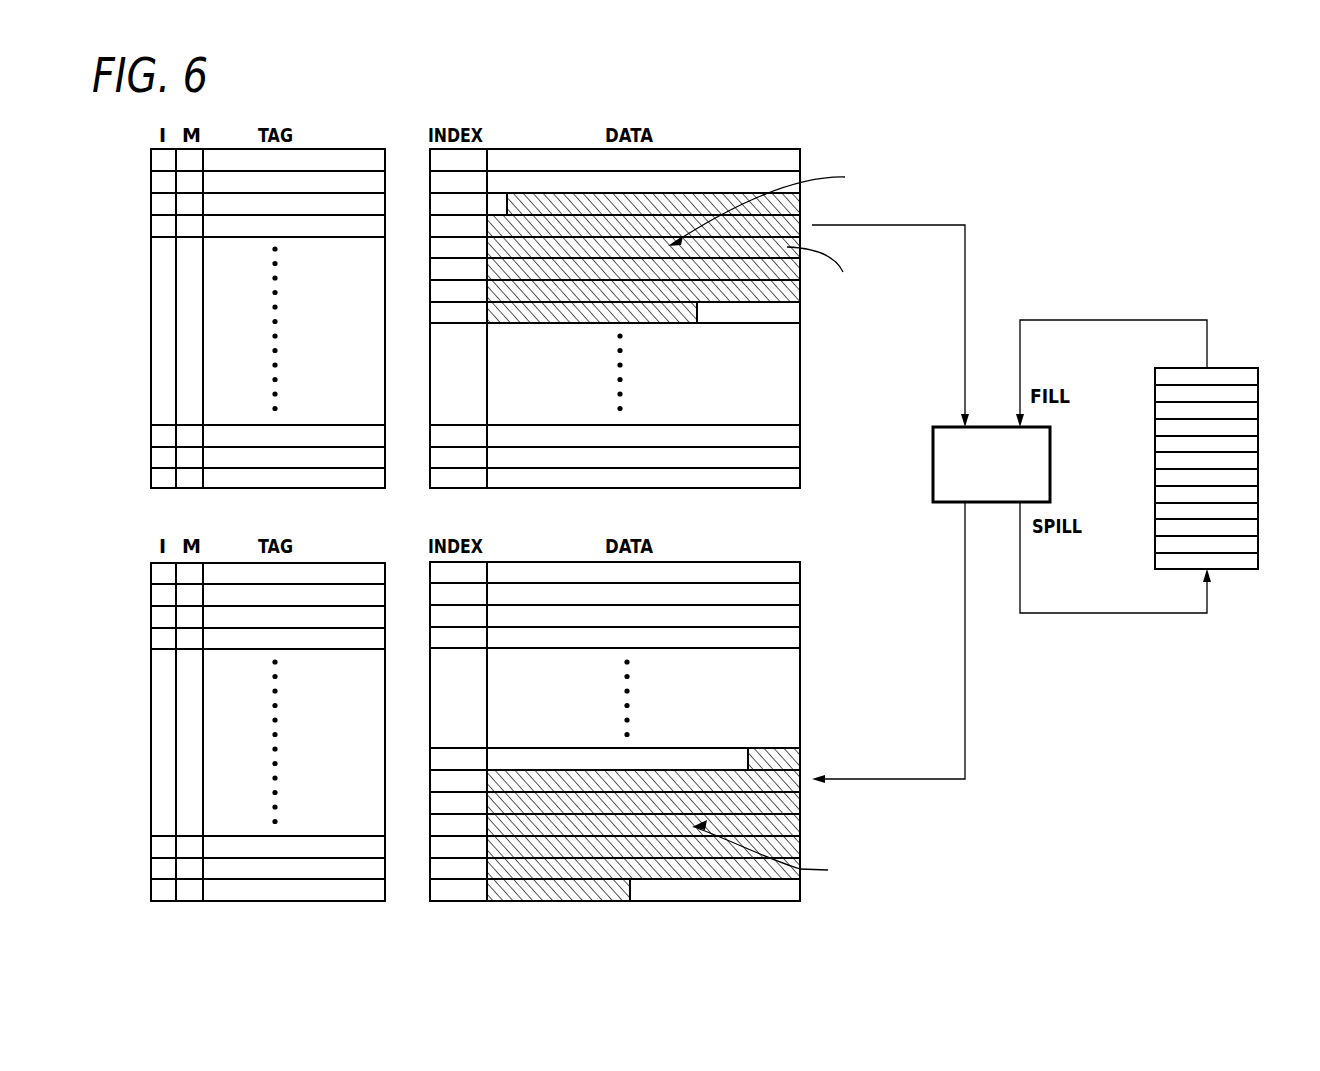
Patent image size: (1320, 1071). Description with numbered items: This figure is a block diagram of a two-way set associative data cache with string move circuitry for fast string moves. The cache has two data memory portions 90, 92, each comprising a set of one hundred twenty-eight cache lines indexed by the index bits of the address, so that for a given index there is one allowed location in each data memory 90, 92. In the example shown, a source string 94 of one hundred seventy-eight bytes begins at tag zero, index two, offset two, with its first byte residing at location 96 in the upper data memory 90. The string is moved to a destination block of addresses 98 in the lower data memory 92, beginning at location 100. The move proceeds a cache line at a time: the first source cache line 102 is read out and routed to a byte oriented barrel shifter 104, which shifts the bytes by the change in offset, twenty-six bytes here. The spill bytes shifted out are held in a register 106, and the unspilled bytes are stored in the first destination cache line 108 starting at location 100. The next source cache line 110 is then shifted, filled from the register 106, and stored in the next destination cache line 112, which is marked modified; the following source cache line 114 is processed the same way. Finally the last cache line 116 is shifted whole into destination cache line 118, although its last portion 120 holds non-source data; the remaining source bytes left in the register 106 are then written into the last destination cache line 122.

The data memory portion 90 is at (802, 396).
The data memory portion 92 is at (803, 697).
The source string 94 is at (772, 207).
The location 96 is at (497, 200).
The destination block of addresses 98 is at (778, 851).
The location 100 is at (747, 760).
The first source cache line 102 is at (684, 200).
The barrel shifter 104 is at (933, 482).
The register 106 is at (1258, 488).
The first destination cache line 108 is at (597, 757).
The next source cache line 110 is at (567, 222).
The next destination cache line 112 is at (745, 782).
The next source cache line 114 is at (832, 275).
The last cache line 116 is at (661, 311).
The destination cache line 118 is at (673, 868).
The last portion 120 is at (743, 313).
The last destination cache line 122 is at (522, 892).